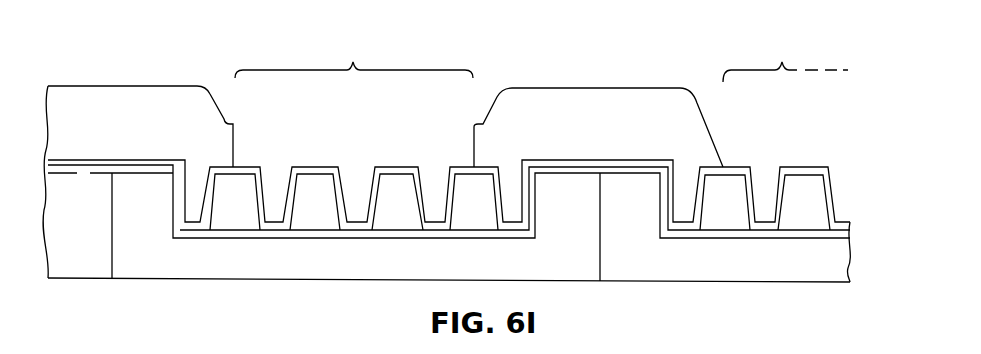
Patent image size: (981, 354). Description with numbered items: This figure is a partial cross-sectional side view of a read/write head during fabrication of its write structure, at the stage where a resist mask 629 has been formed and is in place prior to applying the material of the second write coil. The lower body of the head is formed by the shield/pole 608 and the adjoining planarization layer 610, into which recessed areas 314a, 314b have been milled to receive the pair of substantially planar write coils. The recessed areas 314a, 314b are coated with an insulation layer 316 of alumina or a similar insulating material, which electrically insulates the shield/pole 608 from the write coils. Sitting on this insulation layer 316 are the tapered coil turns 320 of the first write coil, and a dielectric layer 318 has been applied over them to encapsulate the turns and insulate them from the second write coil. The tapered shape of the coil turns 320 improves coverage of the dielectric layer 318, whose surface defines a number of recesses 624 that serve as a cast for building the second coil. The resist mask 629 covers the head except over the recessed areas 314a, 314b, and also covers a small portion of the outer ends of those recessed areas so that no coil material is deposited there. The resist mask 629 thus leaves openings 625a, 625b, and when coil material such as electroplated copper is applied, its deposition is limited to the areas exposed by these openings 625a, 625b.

The shield/pole 608 is at (140, 267).
The planarization layer 610 is at (805, 268).
The dielectric layer 318 is at (85, 162).
The insulation layer 316 is at (235, 237).
The coil turns 320 is at (312, 182).
The recesses 624 is at (275, 180).
The resist mask 629 is at (162, 98).
The opening 625a is at (354, 54).
The opening 625b is at (785, 58).
The recessed area 314a is at (315, 100).
The recessed area 314b is at (753, 108).